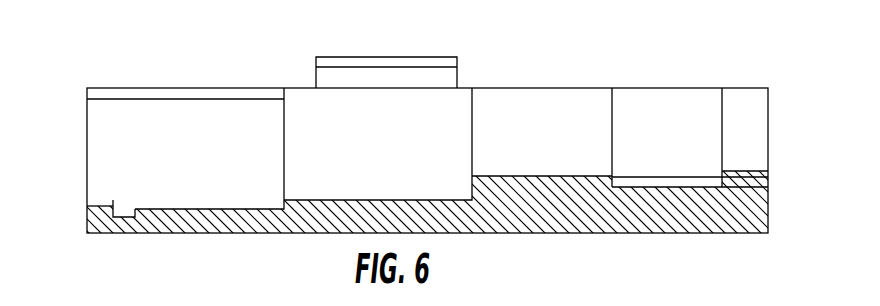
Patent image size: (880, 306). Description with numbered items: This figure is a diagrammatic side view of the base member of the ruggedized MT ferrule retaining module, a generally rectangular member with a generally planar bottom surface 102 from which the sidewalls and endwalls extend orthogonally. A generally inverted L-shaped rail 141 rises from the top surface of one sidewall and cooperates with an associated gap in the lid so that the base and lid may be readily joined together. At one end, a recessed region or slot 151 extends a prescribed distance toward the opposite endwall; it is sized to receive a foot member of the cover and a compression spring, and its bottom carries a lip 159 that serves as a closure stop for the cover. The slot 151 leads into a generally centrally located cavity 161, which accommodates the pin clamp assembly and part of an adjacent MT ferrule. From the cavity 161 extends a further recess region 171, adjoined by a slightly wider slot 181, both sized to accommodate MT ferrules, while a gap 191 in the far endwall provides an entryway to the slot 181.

The bottom surface 102 is at (180, 233).
The inverted L-shaped rail 141 is at (402, 57).
The recessed region or slot 151 is at (205, 157).
The lip 159 is at (113, 200).
The cavity 161 is at (395, 152).
The recess region 171 is at (552, 142).
The slot 181 is at (678, 140).
The gap 191 is at (768, 115).